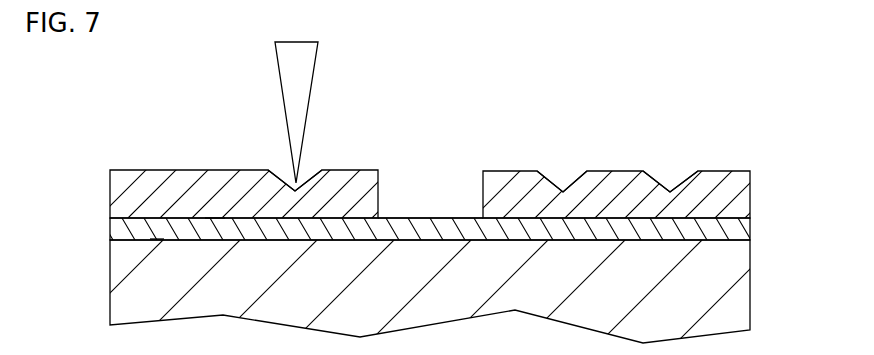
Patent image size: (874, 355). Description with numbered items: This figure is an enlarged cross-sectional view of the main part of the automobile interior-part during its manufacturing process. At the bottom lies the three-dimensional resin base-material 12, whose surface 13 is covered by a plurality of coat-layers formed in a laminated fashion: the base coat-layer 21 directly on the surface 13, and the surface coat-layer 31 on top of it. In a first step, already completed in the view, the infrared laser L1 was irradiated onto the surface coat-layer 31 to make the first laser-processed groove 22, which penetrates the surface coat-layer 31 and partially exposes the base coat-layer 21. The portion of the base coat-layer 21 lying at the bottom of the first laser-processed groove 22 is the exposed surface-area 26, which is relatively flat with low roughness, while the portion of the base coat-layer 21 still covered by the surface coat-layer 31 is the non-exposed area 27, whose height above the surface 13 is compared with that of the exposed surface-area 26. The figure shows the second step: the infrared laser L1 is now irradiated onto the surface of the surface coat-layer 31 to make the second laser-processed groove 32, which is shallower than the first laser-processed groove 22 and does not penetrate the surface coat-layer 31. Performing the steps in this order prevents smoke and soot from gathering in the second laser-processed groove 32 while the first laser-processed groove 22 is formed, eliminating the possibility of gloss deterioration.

The resin base-material 12 is at (140, 294).
The base coat-layer 21 is at (122, 233).
The surface coat-layer 31 is at (127, 192).
The first laser-processed groove 22 is at (483, 199).
The second laser-processed groove 32 is at (313, 174).
The exposed surface-area 26 is at (397, 216).
The non-exposed area 27 is at (215, 216).
The surface 13 is at (157, 238).
The infrared laser L1 is at (303, 83).